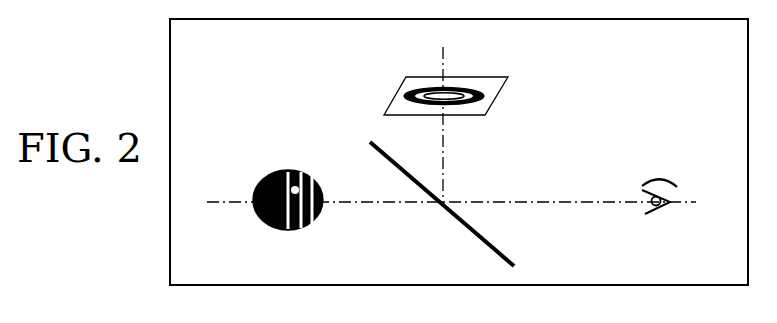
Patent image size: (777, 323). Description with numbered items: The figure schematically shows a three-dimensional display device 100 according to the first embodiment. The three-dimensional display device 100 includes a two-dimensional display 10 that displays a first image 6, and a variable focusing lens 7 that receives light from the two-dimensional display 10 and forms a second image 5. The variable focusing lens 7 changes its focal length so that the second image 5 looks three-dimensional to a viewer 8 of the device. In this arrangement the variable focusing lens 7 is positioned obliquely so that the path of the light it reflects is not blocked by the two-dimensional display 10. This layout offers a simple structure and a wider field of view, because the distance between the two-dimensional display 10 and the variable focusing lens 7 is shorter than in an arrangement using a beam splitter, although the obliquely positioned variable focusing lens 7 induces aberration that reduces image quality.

The three-dimensional display device 100 is at (167, 255).
The second image 5 is at (250, 180).
The first image 6 is at (428, 90).
The two-dimensional display 10 is at (493, 72).
The variable focusing lens 7 is at (507, 254).
The viewer 8 is at (685, 181).